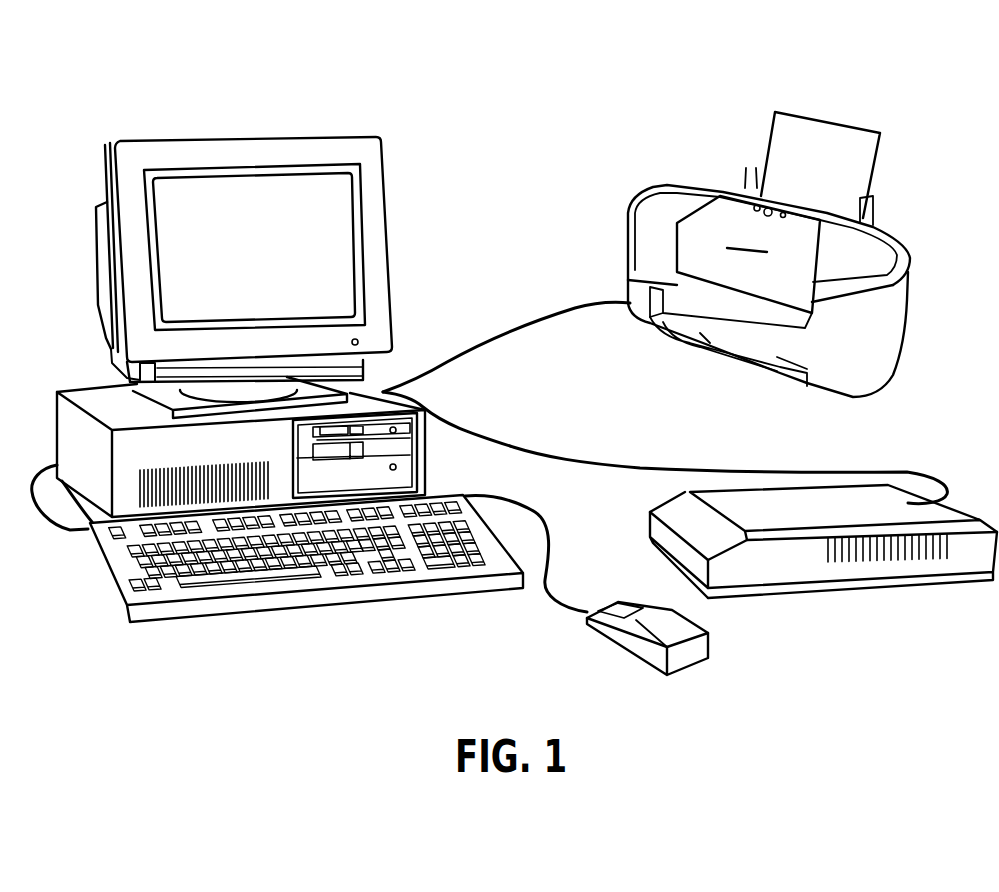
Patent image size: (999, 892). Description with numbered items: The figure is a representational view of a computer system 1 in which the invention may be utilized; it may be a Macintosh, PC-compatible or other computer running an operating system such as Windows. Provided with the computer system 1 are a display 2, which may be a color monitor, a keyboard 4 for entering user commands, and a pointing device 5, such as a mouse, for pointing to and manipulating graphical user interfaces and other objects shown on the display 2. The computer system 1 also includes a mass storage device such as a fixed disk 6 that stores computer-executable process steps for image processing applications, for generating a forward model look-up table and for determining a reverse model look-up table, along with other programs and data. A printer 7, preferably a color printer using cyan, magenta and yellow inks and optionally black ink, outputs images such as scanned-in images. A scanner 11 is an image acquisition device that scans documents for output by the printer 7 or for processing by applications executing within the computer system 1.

The computer system 1 is at (440, 175).
The display 2 is at (277, 137).
The keyboard 4 is at (190, 590).
The pointing device 5 is at (687, 667).
The fixed disk 6 is at (396, 470).
The printer 7 is at (667, 186).
The scanner 11 is at (860, 590).